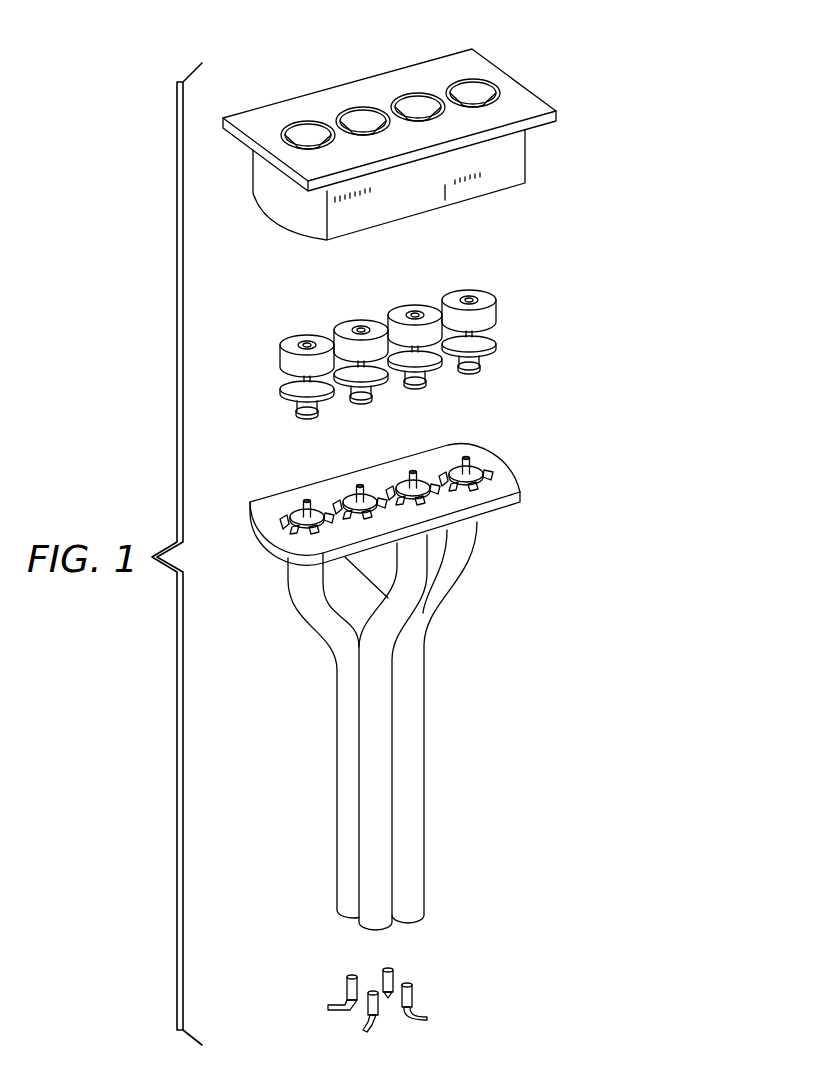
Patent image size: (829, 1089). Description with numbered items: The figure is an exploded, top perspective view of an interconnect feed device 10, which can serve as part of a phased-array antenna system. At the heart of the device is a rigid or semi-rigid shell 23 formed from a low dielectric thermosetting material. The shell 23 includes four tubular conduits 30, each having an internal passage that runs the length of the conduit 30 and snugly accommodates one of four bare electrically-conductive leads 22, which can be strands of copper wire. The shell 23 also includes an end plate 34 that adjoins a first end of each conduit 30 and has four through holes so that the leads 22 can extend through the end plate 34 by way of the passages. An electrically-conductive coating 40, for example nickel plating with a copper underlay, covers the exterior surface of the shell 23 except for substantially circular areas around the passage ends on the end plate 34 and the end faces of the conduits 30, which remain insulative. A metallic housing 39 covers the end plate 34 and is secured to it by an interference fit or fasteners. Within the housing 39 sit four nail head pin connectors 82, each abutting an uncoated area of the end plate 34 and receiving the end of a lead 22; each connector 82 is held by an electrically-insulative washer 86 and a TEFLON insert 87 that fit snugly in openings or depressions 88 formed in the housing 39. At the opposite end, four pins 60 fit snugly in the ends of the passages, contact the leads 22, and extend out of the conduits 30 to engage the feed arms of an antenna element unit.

The interconnect feed device 10 is at (570, 57).
The metallic housing 39 is at (542, 150).
The openings or depressions 88 is at (300, 140).
The TEFLON insert 87 is at (290, 341).
The electrically-insulative washer 86 is at (285, 383).
The nail head pin connector 82 is at (297, 417).
The shell 23 is at (518, 467).
The end plate 34 is at (272, 492).
The electrically-conductive leads 22 is at (307, 502).
The tubular conduits 30 is at (336, 755).
The electrically-conductive coating 40 is at (415, 727).
The pins 60 is at (345, 985).